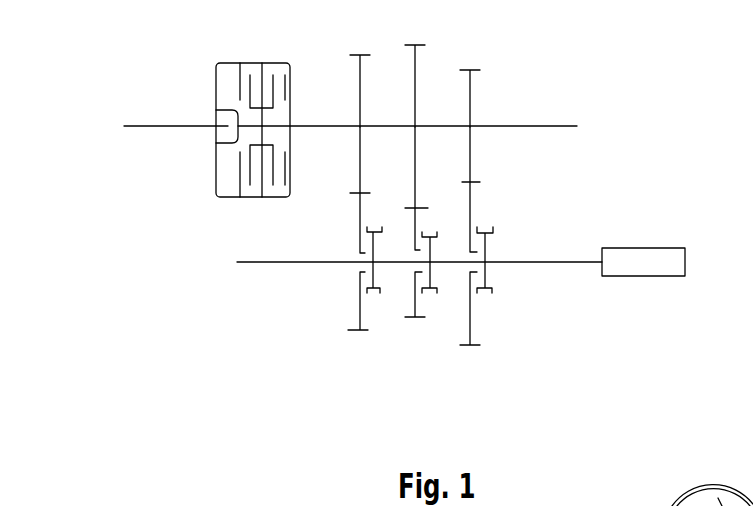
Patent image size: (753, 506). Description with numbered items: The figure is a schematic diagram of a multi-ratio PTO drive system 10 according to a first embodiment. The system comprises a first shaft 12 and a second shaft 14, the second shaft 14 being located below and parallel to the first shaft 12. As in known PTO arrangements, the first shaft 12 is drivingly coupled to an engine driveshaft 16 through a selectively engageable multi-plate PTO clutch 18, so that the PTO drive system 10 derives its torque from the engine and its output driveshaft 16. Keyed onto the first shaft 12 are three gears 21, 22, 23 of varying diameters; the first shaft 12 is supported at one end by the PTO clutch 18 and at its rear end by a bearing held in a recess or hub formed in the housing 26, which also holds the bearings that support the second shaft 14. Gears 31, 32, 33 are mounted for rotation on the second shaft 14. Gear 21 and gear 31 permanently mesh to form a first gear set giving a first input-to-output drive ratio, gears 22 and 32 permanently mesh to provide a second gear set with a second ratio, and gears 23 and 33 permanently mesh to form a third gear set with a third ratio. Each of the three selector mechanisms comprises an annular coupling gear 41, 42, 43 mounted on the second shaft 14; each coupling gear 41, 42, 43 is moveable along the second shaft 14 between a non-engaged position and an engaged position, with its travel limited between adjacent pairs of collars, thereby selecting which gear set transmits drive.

The multi-ratio PTO drive system 10 is at (699, 75).
The first shaft 12 is at (547, 125).
The second shaft 14 is at (535, 262).
The engine driveshaft 16 is at (135, 125).
The multi-plate PTO clutch 18 is at (250, 63).
The gear 21 is at (360, 88).
The gear 22 is at (415, 82).
The gear 23 is at (470, 96).
The gear 31 is at (358, 225).
The gear 32 is at (415, 227).
The gear 33 is at (470, 199).
The annular coupling gear 41 is at (375, 292).
The annular coupling gear 42 is at (431, 278).
The annular coupling gear 43 is at (487, 252).
The housing 26 is at (634, 505).